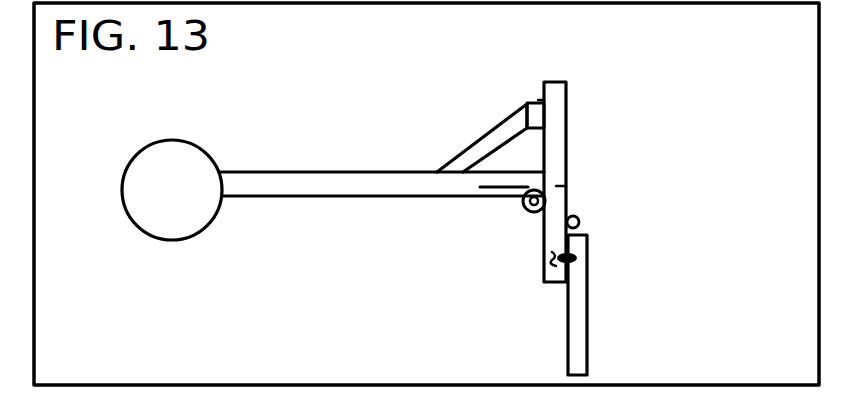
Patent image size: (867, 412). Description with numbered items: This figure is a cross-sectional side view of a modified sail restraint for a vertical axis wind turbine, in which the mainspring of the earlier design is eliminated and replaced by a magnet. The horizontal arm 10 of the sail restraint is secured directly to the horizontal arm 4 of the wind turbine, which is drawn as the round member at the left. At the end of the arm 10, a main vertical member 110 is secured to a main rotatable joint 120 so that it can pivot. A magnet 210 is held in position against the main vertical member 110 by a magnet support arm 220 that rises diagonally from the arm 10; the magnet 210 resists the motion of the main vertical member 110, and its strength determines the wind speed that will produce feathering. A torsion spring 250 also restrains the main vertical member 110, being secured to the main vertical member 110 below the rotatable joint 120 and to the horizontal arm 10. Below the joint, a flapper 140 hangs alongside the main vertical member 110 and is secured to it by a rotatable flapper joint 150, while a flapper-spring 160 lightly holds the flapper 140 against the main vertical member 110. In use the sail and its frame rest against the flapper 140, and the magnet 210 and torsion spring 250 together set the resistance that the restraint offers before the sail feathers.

The horizontal arm of the wind turbine 4 is at (136, 226).
The horizontal arm of the sail restraint 10 is at (360, 170).
The magnet support arm 220 is at (473, 143).
The magnet 210 is at (538, 100).
The main vertical member 110 is at (567, 146).
The torsion spring 250 is at (560, 186).
The main rotatable joint 120 is at (522, 205).
The rotatable flapper joint 150 is at (585, 222).
The flapper 140 is at (587, 305).
The flapper-spring 160 is at (552, 258).